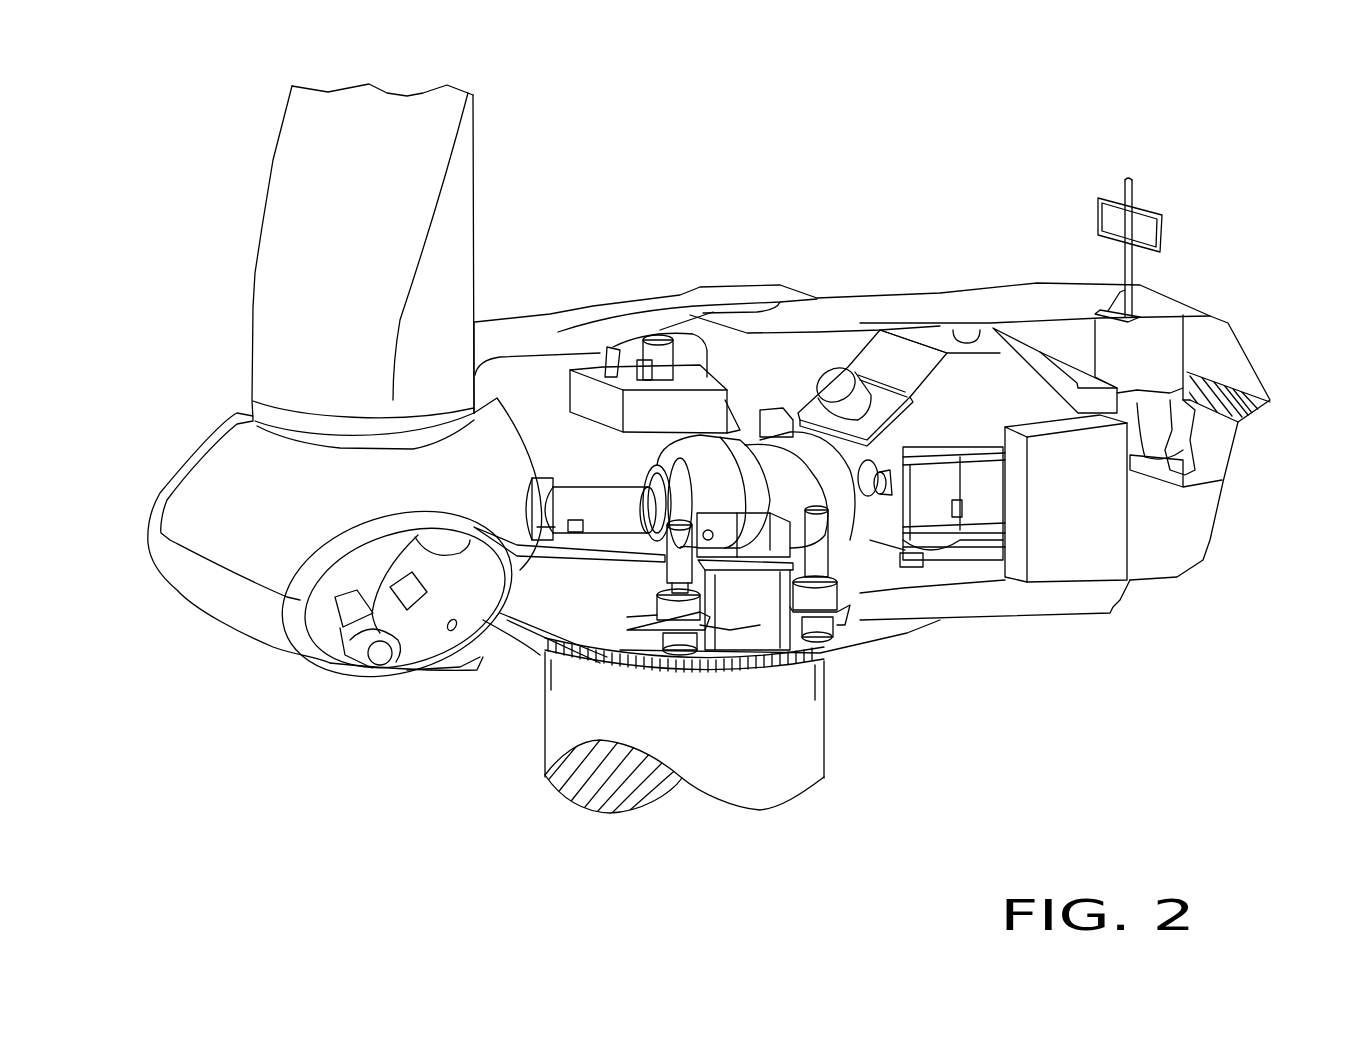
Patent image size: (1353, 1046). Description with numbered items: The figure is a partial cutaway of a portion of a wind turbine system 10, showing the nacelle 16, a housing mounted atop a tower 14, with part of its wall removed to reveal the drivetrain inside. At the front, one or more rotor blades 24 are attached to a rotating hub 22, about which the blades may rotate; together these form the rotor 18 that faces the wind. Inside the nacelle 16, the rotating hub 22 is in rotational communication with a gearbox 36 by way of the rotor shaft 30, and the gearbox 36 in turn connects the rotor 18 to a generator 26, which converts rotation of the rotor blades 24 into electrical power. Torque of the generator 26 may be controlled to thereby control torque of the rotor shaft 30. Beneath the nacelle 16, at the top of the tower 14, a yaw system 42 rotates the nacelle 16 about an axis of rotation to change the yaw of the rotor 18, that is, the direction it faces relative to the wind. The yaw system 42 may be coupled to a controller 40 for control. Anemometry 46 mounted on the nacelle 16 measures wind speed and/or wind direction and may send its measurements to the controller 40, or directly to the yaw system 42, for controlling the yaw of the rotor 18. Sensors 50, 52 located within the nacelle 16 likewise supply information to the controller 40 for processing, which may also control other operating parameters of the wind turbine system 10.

The wind turbine system 10 is at (1282, 232).
The tower 14 is at (758, 777).
The nacelle 16 is at (499, 329).
The rotor 18 is at (134, 400).
The rotating hub 22 is at (257, 562).
The rotor blades 24 is at (297, 237).
The generator 26 is at (932, 516).
The rotor shaft 30 is at (577, 500).
The gearbox 36 is at (805, 456).
The controller 40 is at (1066, 518).
The yaw system 42 is at (614, 673).
The anemometry 46 is at (1164, 220).
The sensor 50 is at (882, 480).
The sensor 52 is at (577, 533).